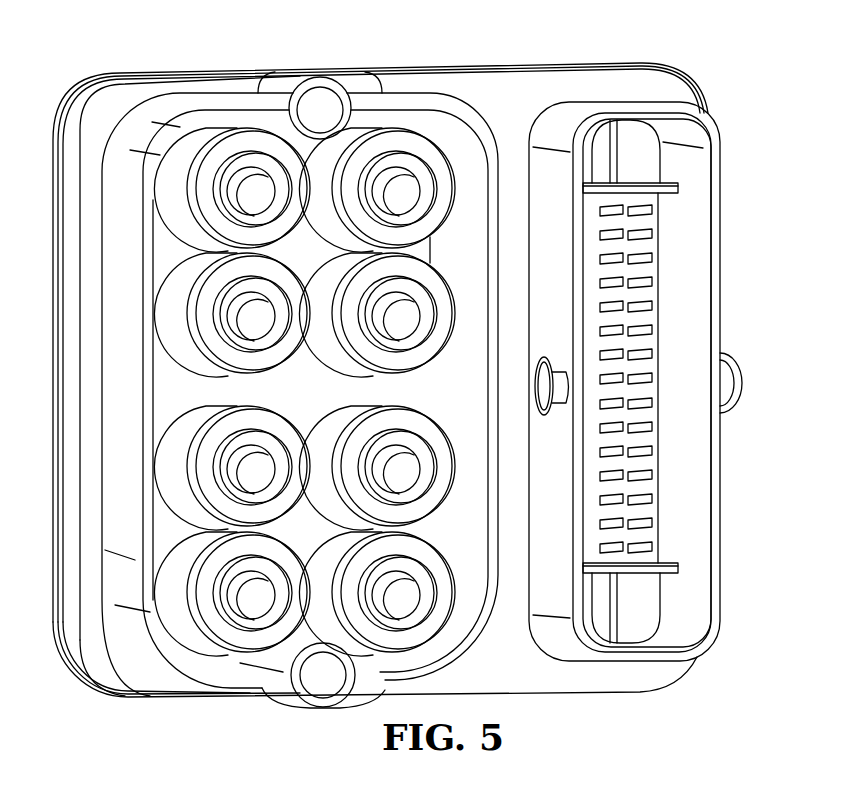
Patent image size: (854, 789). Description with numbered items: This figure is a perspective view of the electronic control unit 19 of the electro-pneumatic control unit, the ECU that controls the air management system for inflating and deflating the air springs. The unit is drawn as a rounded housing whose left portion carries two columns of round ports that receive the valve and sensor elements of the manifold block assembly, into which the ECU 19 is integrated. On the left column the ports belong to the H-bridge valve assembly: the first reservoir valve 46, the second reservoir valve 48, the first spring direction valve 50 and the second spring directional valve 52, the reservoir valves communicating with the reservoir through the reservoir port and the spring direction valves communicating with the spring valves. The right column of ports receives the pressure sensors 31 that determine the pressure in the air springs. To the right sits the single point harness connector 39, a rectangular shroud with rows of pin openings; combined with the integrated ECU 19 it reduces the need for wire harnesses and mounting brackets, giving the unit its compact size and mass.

The electronic control unit 19 is at (597, 47).
The pressure sensor 31 is at (400, 176).
The single point harness connector 39 is at (722, 272).
The first reservoir valve 46 is at (253, 188).
The second reservoir valve 48 is at (252, 318).
The first spring direction valve 50 is at (250, 467).
The second spring directional valve 52 is at (250, 593).